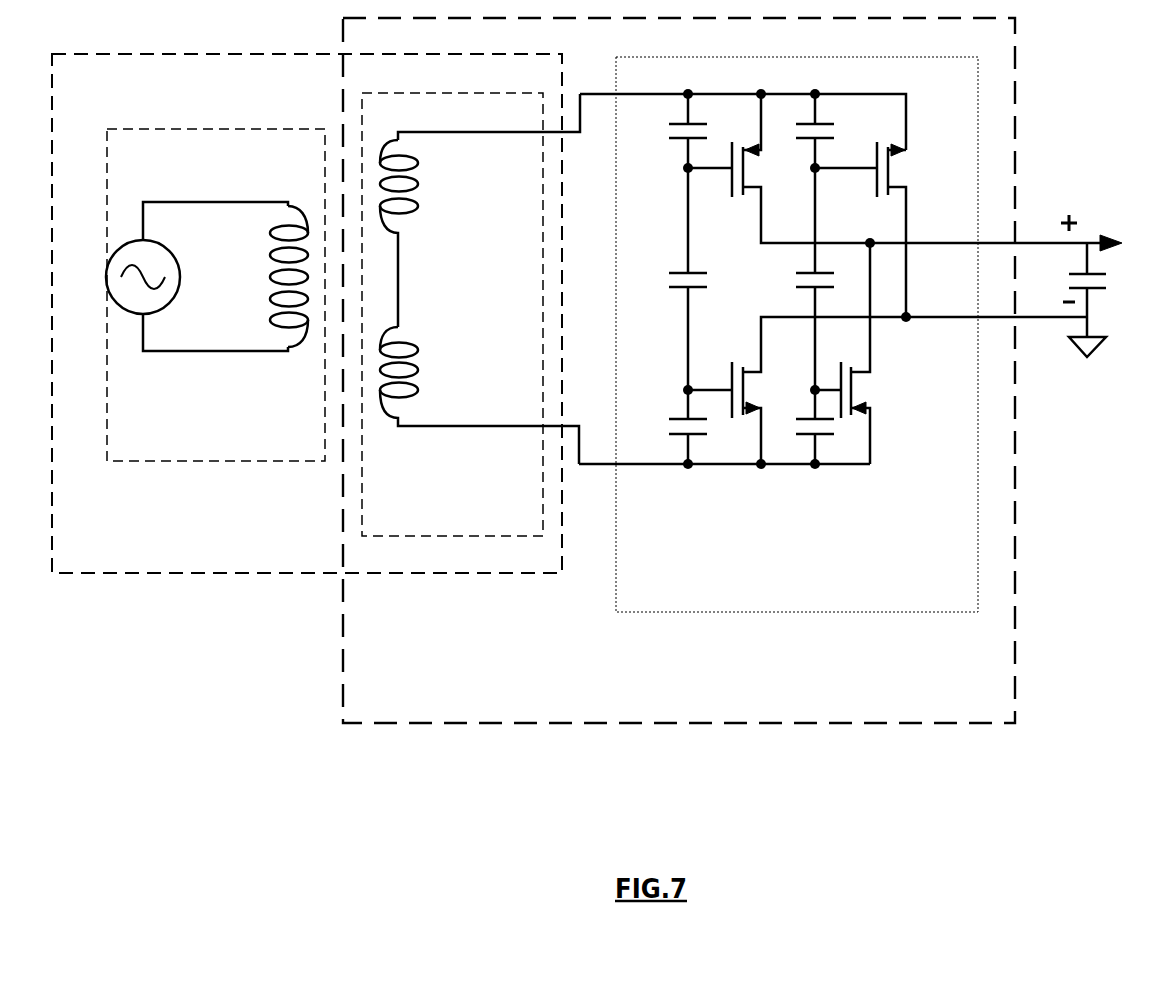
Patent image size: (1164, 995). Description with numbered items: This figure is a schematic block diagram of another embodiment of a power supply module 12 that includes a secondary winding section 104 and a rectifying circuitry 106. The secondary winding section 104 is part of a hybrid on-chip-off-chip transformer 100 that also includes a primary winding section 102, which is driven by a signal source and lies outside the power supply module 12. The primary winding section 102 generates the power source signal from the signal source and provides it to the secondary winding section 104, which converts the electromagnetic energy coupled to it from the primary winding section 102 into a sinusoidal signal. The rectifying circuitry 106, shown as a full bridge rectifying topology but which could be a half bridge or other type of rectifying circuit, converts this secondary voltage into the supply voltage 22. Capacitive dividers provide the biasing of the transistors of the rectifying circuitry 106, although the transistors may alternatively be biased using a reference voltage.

The power supply module 12 is at (808, 714).
The hybrid on-chip-off-chip transformer 100 is at (62, 527).
The primary winding section 102 is at (277, 451).
The secondary winding section 104 is at (513, 525).
The rectifying circuitry 106 is at (912, 602).
The supply voltage 22 is at (1130, 358).